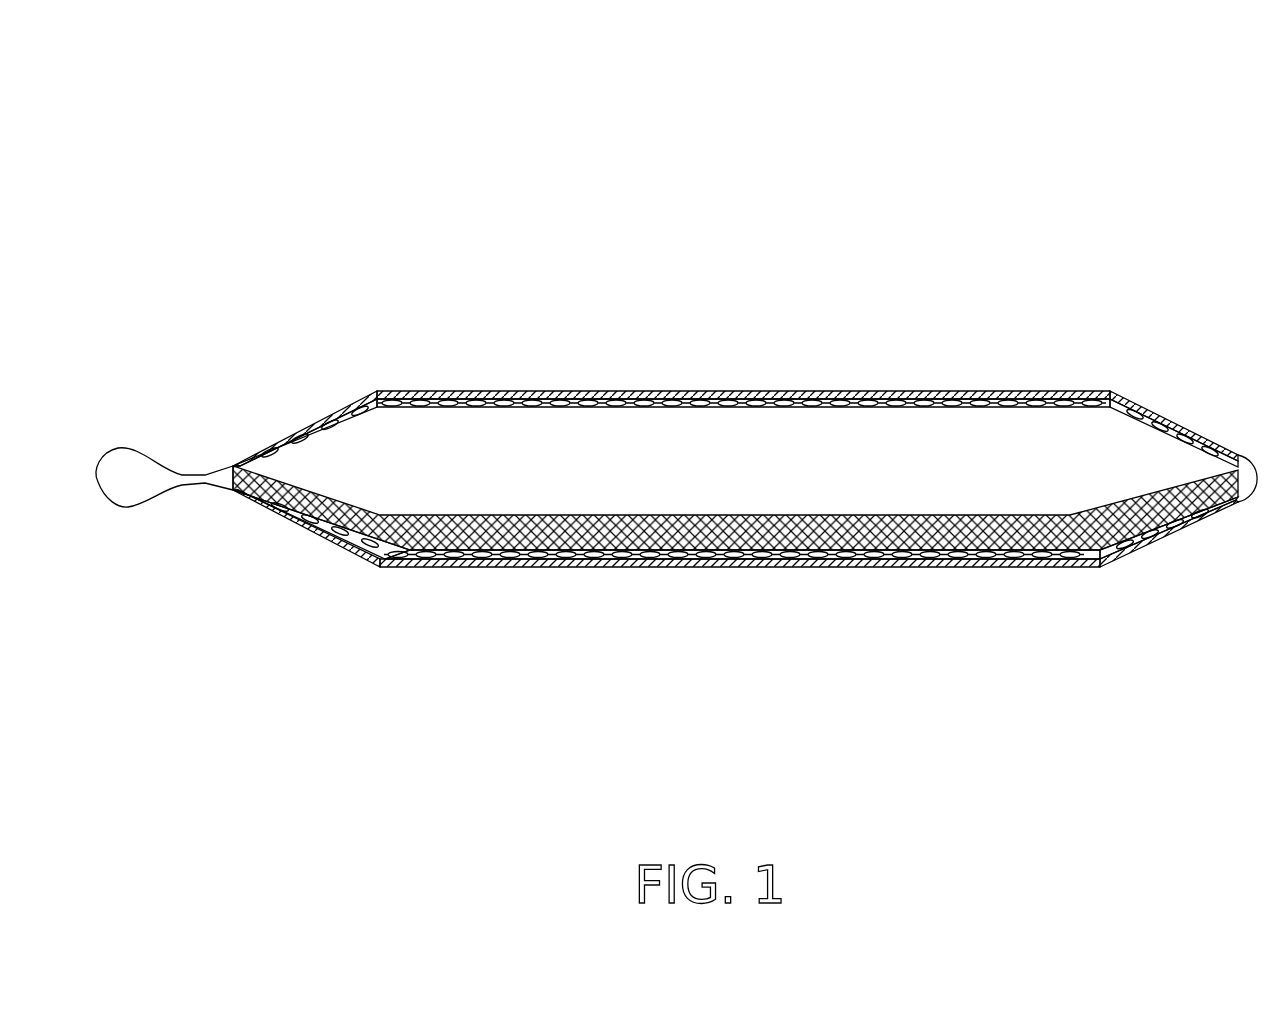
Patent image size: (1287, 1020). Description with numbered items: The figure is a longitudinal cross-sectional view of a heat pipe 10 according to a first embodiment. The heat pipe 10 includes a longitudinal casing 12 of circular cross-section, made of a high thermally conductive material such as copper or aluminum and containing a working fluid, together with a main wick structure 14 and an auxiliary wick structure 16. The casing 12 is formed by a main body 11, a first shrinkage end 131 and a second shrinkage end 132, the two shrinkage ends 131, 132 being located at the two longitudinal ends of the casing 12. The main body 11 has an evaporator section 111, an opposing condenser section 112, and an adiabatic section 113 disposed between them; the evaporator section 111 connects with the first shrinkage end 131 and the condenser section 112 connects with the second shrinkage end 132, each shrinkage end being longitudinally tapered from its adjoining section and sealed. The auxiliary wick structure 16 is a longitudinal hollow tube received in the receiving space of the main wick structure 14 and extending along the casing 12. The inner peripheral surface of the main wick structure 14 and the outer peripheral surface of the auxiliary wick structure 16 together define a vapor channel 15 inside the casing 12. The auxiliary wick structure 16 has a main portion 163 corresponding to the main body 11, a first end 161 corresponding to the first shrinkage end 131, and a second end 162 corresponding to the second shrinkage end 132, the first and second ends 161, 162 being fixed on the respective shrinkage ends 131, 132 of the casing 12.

The heat pipe 10 is at (611, 113).
The main body 11 is at (498, 308).
The evaporator section 111 is at (392, 378).
The condenser section 112 is at (865, 378).
The adiabatic section 113 is at (627, 378).
The casing 12 is at (425, 235).
The first shrinkage end 131 is at (338, 410).
The second shrinkage end 132 is at (1147, 403).
The main wick structure 14 is at (314, 424).
The vapor channel 15 is at (1115, 478).
The auxiliary wick structure 16 is at (410, 669).
The first end 161 is at (398, 563).
The second end 162 is at (1122, 553).
The main portion 163 is at (745, 530).